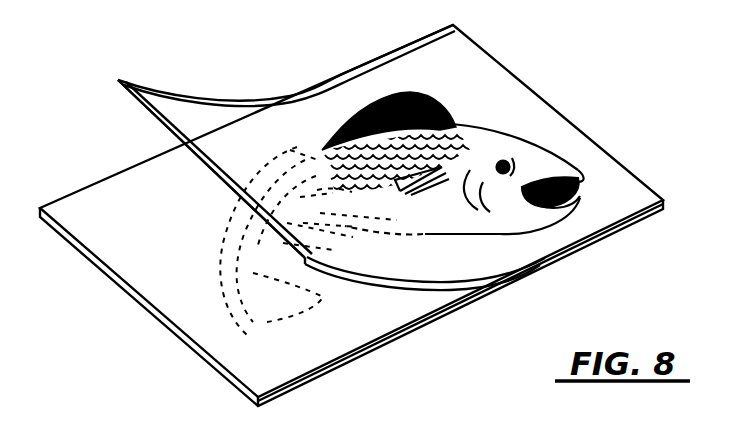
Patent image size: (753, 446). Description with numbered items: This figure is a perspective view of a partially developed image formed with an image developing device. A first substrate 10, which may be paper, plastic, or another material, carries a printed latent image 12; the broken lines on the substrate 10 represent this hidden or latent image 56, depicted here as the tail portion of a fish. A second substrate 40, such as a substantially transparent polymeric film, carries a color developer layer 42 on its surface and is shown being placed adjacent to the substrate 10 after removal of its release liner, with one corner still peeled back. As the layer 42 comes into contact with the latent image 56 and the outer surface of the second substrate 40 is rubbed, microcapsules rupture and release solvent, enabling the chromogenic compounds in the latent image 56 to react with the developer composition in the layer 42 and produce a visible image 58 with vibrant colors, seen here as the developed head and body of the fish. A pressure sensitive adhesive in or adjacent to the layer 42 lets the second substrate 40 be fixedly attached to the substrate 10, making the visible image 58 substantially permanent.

The substrate 10 is at (203, 366).
The latent image 12 is at (343, 341).
The second substrate 40 is at (205, 117).
The color developer layer 42 is at (166, 136).
The latent image 56 is at (221, 227).
The visible image 58 is at (457, 124).